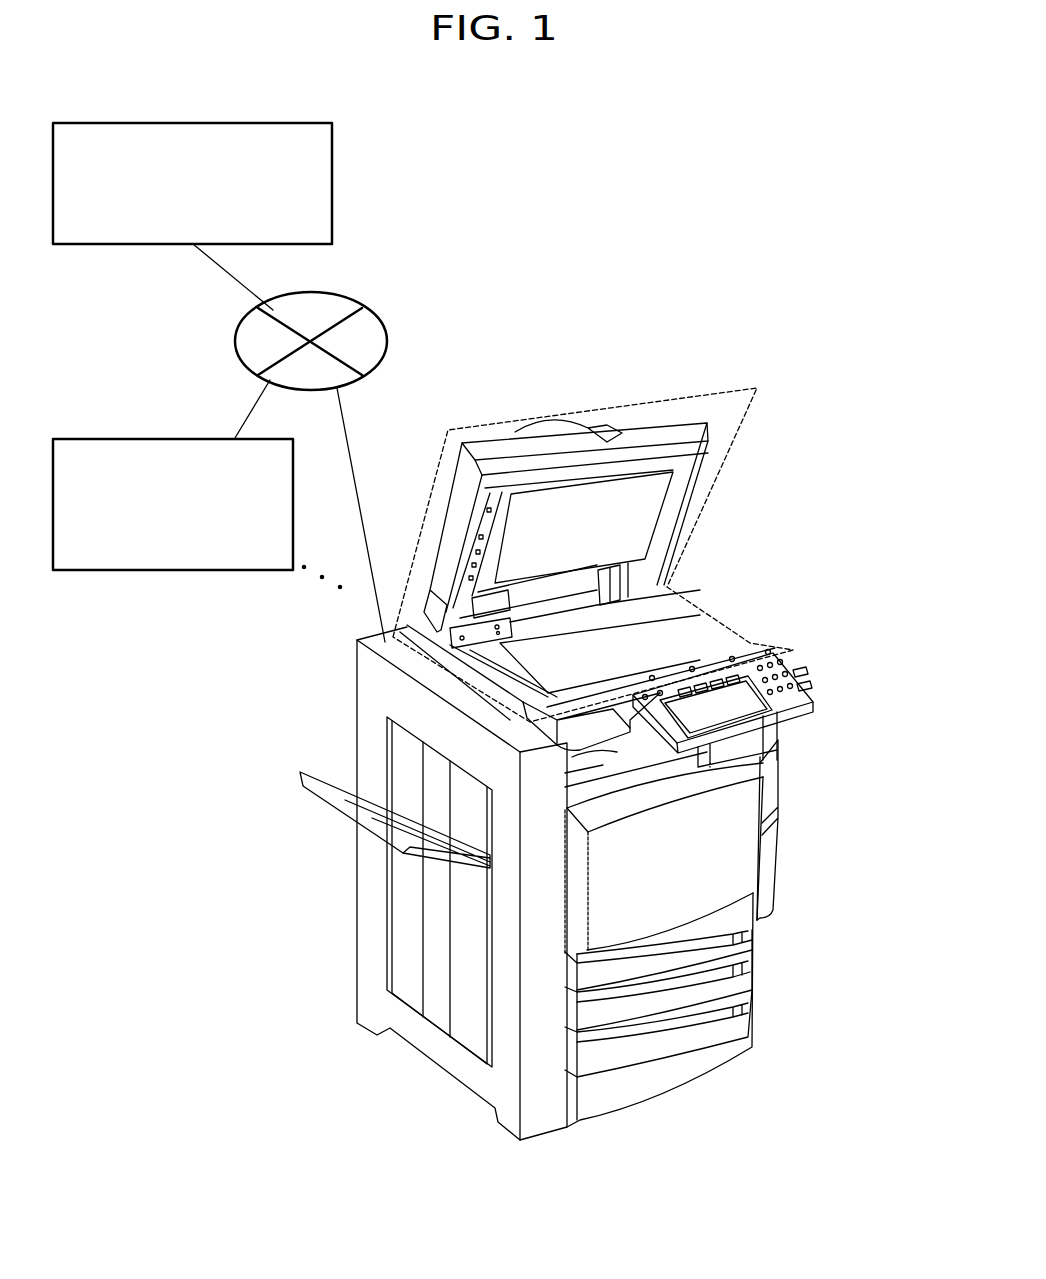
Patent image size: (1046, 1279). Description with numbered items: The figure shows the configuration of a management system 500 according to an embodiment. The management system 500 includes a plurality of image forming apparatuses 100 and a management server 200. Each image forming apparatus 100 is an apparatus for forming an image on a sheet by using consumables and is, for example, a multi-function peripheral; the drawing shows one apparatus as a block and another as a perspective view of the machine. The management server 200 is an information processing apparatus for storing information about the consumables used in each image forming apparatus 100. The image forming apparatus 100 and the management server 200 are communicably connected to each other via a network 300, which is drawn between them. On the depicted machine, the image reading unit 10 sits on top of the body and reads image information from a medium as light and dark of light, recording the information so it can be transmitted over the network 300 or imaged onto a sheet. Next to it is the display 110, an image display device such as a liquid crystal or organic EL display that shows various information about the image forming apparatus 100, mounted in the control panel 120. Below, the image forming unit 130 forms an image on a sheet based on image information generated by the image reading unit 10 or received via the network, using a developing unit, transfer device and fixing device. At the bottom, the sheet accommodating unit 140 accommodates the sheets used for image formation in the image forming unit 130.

The management system 500 is at (402, 131).
The management server 200 is at (250, 123).
The network 300 is at (340, 290).
The image forming apparatus 100 is at (264, 439).
The image reading unit 10 is at (720, 392).
The display 110 is at (740, 697).
The control panel 120 is at (802, 686).
The image forming unit 130 is at (745, 877).
The sheet accommodating unit 140 is at (766, 920).